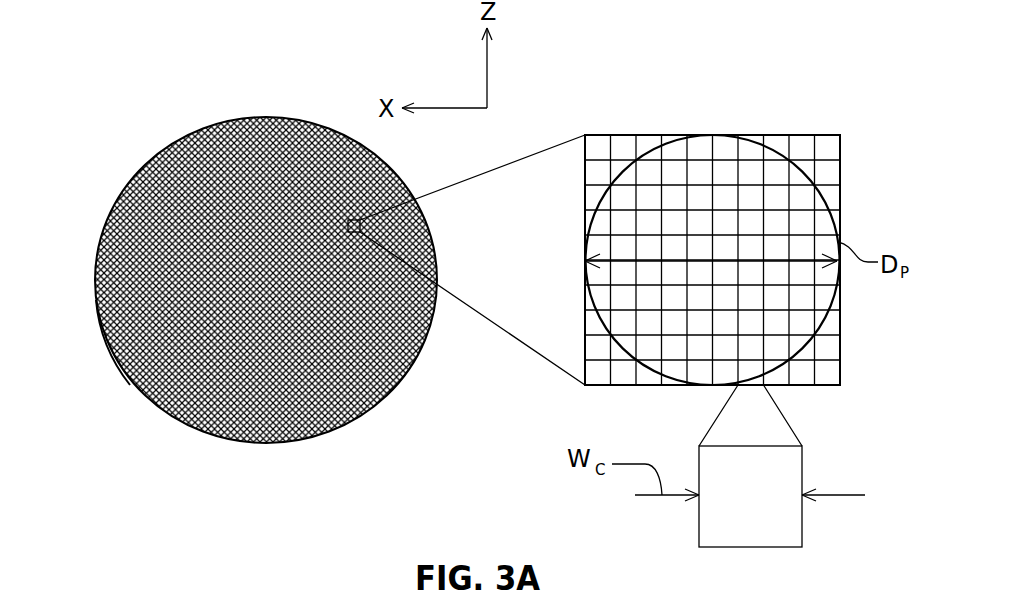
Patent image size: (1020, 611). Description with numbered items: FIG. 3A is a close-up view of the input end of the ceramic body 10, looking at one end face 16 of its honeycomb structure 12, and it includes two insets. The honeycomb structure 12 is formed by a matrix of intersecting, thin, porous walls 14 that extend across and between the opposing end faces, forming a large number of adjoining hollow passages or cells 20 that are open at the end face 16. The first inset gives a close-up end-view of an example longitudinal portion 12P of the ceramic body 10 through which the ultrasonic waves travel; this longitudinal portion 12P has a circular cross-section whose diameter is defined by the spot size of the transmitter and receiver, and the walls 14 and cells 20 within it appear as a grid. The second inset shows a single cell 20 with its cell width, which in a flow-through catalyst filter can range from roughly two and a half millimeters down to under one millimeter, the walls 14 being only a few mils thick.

The ceramic body 10 is at (165, 114).
The honeycomb structure 12 is at (140, 253).
The end face 16 is at (138, 352).
The longitudinal portion 12P is at (585, 317).
The cell 20 is at (607, 136).
The wall 14 is at (740, 142).